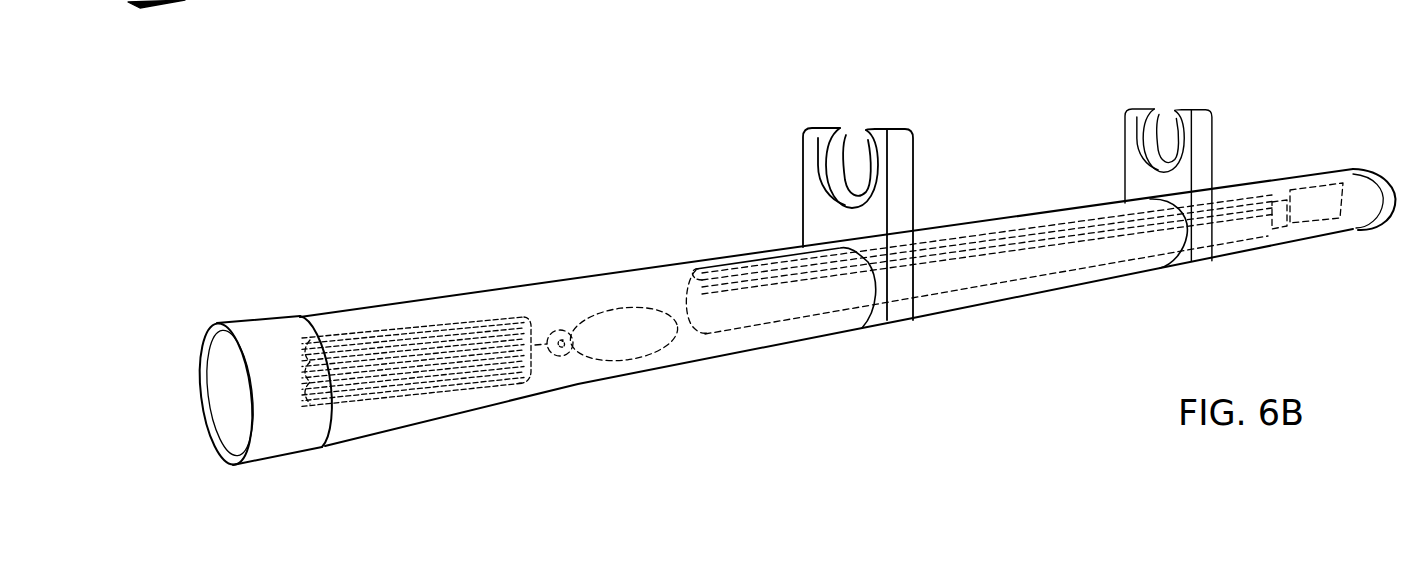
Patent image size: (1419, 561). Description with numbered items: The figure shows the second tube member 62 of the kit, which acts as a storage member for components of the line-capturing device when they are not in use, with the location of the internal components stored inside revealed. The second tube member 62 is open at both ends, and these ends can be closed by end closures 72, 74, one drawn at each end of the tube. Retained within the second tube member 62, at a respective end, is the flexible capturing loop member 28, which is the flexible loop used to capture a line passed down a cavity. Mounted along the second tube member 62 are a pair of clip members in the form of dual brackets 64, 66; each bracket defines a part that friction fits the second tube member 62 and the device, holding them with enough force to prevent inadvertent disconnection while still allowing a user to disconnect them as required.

The second tube member 62 is at (707, 343).
The end closure 74 is at (262, 346).
The end closure 72 is at (1368, 168).
The flexible capturing loop member 28 is at (1092, 250).
The dual bracket 66 is at (825, 180).
The dual bracket 64 is at (1142, 138).